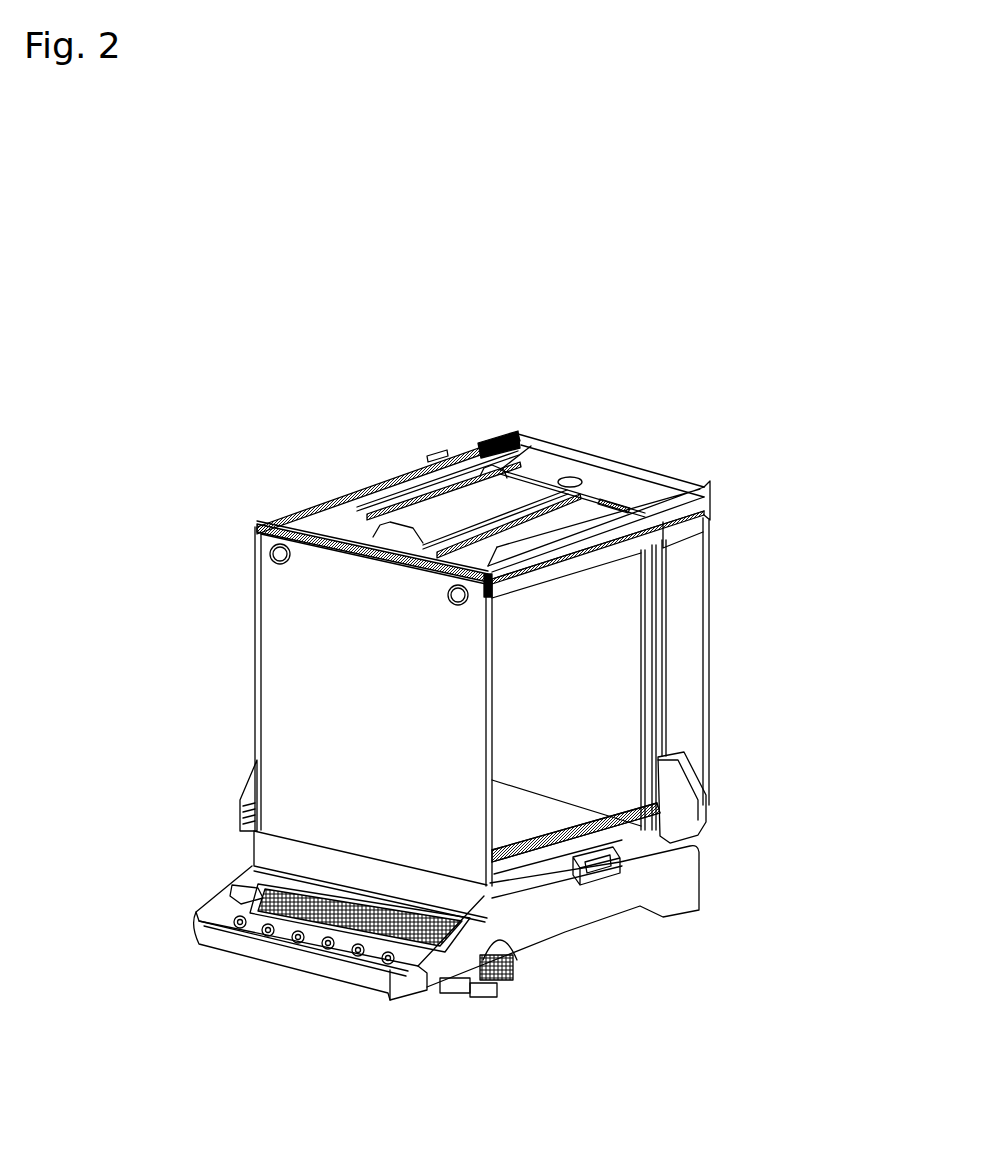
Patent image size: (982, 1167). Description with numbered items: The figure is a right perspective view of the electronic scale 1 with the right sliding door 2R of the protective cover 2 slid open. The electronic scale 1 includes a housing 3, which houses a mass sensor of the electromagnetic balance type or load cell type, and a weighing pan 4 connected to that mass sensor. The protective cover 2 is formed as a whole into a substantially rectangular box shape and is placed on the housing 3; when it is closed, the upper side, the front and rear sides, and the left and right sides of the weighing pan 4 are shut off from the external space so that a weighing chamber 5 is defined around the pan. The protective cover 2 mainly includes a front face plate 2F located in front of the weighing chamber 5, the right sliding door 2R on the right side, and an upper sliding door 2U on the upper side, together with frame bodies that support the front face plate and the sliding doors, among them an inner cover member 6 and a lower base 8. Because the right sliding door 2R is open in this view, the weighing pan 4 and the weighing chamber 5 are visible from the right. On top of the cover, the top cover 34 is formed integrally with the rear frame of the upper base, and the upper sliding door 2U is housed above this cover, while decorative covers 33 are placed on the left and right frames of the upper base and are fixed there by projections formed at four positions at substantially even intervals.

The electronic scale 1 is at (614, 370).
The protective cover 2 is at (314, 503).
The front face plate 2F is at (314, 712).
The upper sliding door 2U is at (407, 505).
The right sliding door 2R is at (677, 677).
The housing 3 is at (670, 882).
The weighing pan 4 is at (522, 828).
The weighing chamber 5 is at (542, 729).
The inner cover member 6 is at (593, 630).
The lower base 8 is at (266, 850).
The decorative cover 33 is at (487, 440).
The top cover 34 is at (587, 468).